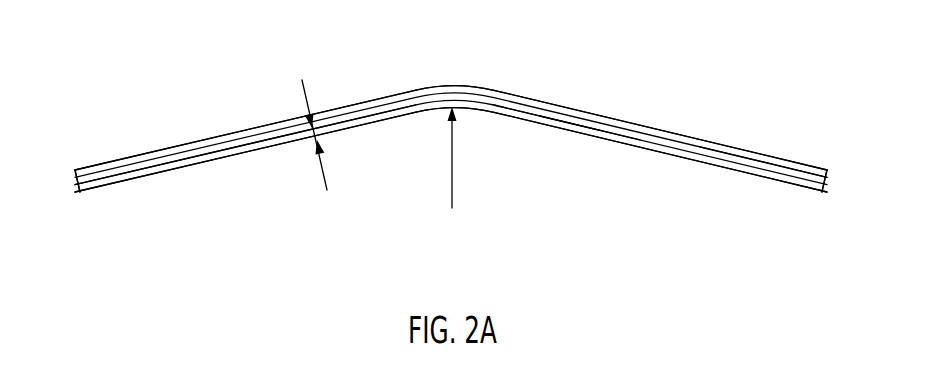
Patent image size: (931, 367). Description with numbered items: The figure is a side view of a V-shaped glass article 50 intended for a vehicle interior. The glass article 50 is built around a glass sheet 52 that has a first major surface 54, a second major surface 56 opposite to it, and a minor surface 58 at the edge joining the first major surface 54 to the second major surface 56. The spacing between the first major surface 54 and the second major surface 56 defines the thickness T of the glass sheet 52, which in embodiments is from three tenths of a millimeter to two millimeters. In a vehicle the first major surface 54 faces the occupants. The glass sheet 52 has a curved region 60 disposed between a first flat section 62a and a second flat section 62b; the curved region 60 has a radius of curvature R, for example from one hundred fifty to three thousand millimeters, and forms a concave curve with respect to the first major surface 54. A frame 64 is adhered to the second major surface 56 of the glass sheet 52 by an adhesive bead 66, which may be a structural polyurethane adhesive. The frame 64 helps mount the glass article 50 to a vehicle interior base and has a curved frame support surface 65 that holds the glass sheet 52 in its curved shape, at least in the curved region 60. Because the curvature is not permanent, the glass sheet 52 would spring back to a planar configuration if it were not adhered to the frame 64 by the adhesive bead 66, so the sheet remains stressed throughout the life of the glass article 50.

The glass article 50 is at (537, 50).
The glass sheet 52 is at (628, 145).
The first major surface 54 is at (243, 157).
The second major surface 56 is at (160, 165).
The minor surface 58 is at (75, 192).
The curved region 60 is at (444, 79).
The first flat section 62a is at (217, 132).
The second flat section 62b is at (662, 125).
The frame 64 is at (755, 157).
The curved frame support surface 65 is at (521, 113).
The adhesive bead 66 is at (562, 121).
The thickness T is at (305, 92).
The radius of curvature R is at (453, 168).